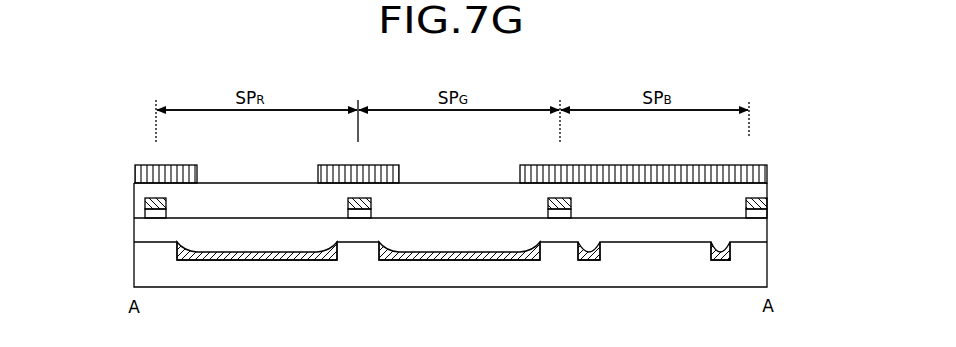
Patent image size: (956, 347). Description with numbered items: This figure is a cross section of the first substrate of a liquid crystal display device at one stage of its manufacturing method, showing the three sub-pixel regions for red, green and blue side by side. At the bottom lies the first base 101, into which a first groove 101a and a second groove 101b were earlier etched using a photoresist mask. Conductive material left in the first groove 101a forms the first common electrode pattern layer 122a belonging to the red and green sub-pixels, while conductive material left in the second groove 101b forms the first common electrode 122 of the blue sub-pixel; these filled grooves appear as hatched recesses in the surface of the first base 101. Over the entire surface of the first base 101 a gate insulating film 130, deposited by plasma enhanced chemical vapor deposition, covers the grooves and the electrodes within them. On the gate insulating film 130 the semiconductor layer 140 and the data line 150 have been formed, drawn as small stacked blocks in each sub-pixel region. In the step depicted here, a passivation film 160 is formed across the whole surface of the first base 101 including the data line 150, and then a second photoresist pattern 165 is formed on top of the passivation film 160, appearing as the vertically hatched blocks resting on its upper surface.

The second photoresist pattern 165 is at (135, 173).
The passivation film 160 is at (134, 188).
The data line 150 is at (145, 203).
The semiconductor layer 140 is at (134, 216).
The gate insulating film 130 is at (134, 239).
The first base 101 is at (134, 266).
The first groove 101a is at (448, 270).
The second groove 101b is at (735, 261).
The first common electrode 122 is at (587, 261).
The first common electrode pattern layer 122a is at (258, 261).